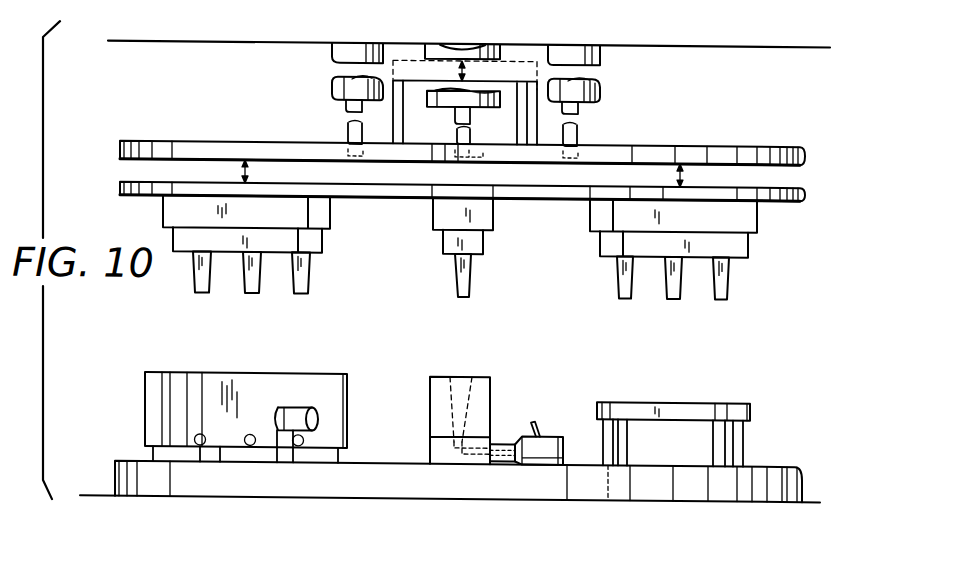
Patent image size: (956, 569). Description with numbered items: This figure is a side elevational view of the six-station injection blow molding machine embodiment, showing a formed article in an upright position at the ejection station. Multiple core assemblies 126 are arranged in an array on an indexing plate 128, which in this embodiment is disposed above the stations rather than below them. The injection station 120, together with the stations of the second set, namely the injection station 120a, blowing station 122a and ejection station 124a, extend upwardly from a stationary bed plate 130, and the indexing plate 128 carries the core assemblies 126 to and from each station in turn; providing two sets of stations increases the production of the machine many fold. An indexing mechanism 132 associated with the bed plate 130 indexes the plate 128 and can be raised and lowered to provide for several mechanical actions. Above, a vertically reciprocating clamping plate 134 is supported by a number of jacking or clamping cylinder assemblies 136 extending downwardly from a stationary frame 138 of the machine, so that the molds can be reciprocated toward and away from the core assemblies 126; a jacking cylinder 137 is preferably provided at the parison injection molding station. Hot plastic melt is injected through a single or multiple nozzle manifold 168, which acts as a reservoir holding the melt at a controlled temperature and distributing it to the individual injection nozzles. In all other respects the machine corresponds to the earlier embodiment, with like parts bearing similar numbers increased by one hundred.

The injection station 120 is at (756, 252).
The injection station 120a is at (492, 395).
The blowing station 122a is at (312, 372).
The ejection station 124a is at (662, 400).
The core assemblies 126 is at (297, 294).
The indexing plate 128 is at (803, 187).
The stationary bed plate 130 is at (820, 430).
The indexing mechanism 132 is at (432, 131).
The clamping plate 134 is at (776, 122).
The clamping cylinder assemblies 136 is at (330, 85).
The jacking cylinder 137 is at (506, 78).
The stationary frame 138 is at (742, 43).
The nozzle manifold 168 is at (548, 434).